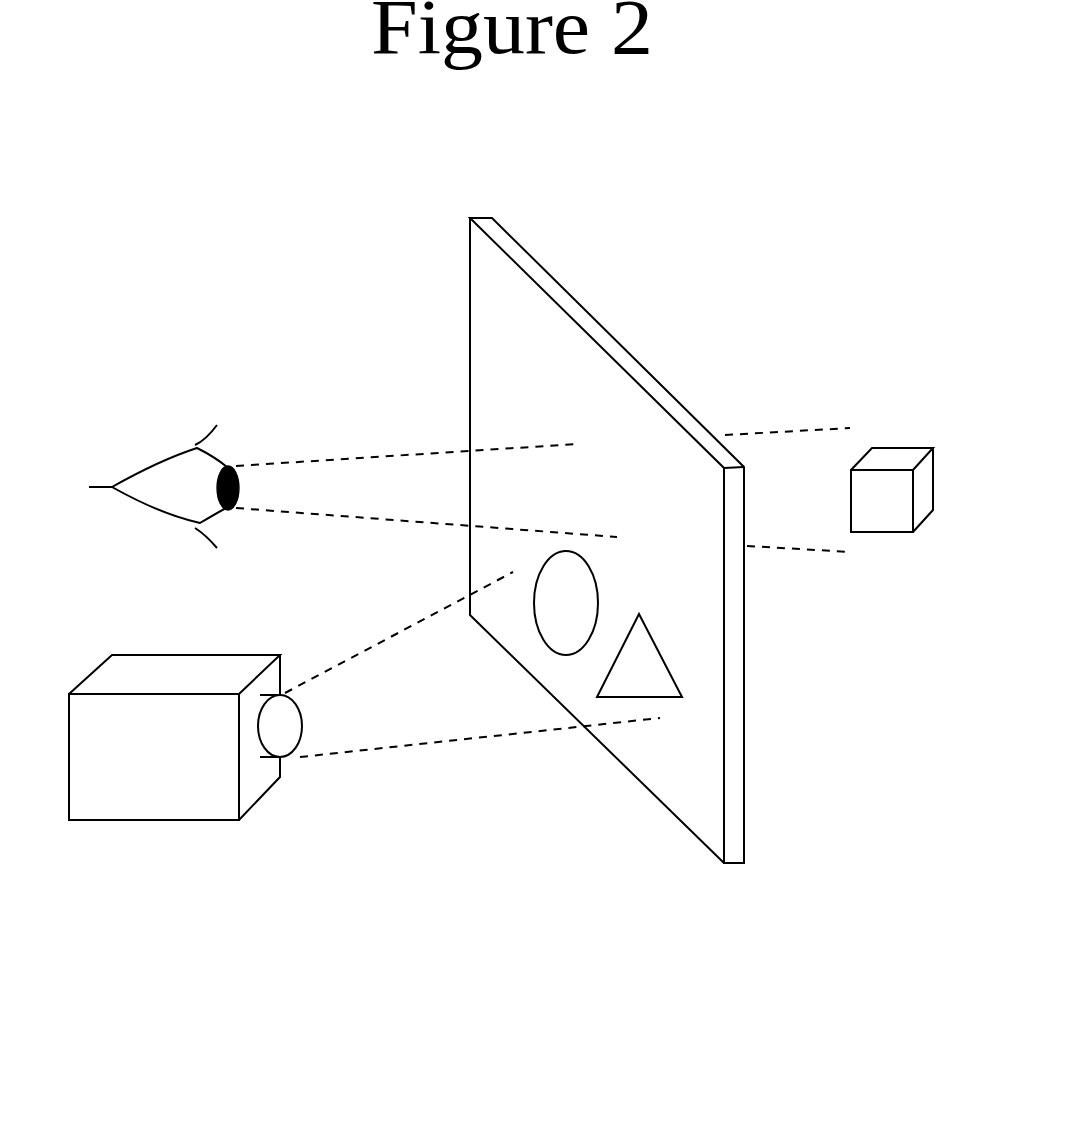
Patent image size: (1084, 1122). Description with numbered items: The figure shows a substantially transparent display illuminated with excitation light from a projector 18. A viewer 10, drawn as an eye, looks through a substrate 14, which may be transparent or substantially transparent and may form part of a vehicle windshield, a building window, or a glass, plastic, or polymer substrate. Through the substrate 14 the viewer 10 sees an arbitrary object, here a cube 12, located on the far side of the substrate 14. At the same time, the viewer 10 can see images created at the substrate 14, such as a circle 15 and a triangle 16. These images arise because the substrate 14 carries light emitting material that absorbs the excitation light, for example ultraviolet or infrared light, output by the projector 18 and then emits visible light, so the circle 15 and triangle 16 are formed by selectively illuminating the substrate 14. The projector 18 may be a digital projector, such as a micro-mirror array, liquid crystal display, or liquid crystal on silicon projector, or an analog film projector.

The viewer 10 is at (217, 445).
The cube 12 is at (893, 448).
The substrate 14 is at (553, 281).
The circle 15 is at (556, 614).
The triangle 16 is at (639, 677).
The projector 18 is at (197, 777).